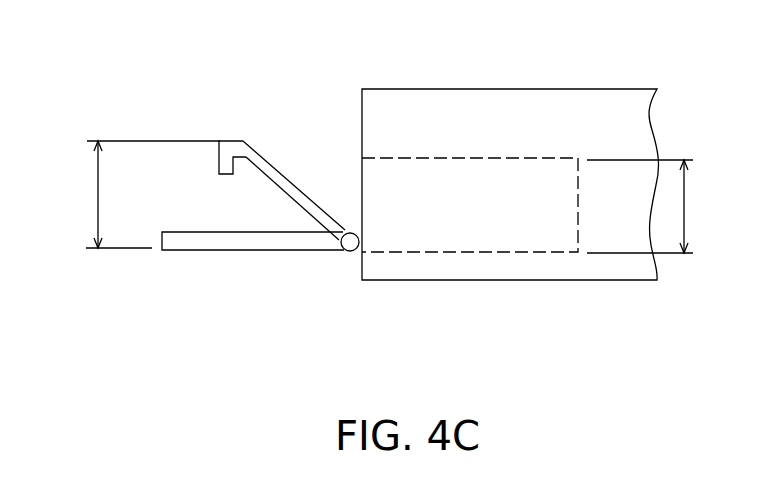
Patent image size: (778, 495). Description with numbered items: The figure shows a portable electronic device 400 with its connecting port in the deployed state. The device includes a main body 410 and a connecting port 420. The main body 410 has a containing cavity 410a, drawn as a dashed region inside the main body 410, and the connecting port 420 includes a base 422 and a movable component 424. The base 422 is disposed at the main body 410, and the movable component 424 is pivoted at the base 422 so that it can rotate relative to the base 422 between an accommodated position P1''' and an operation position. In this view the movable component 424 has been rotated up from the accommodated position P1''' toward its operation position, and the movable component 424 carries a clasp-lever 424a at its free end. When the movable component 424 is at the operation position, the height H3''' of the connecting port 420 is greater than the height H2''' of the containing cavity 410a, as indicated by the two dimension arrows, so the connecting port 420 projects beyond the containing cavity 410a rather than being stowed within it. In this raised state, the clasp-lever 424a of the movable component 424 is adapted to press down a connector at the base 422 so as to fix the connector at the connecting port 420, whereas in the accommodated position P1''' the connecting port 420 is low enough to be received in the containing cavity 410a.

The portable electronic device 400 is at (440, 212).
The main body 410 is at (539, 211).
The containing cavity 410a is at (402, 253).
The connecting port 420 is at (260, 212).
The base 422 is at (240, 248).
The movable component 424 is at (262, 157).
The clasp-lever 424a is at (213, 140).
The height of the containing cavity H2''' is at (673, 206).
The height of the connecting port H3''' is at (121, 194).
The accommodated position P1''' is at (265, 67).